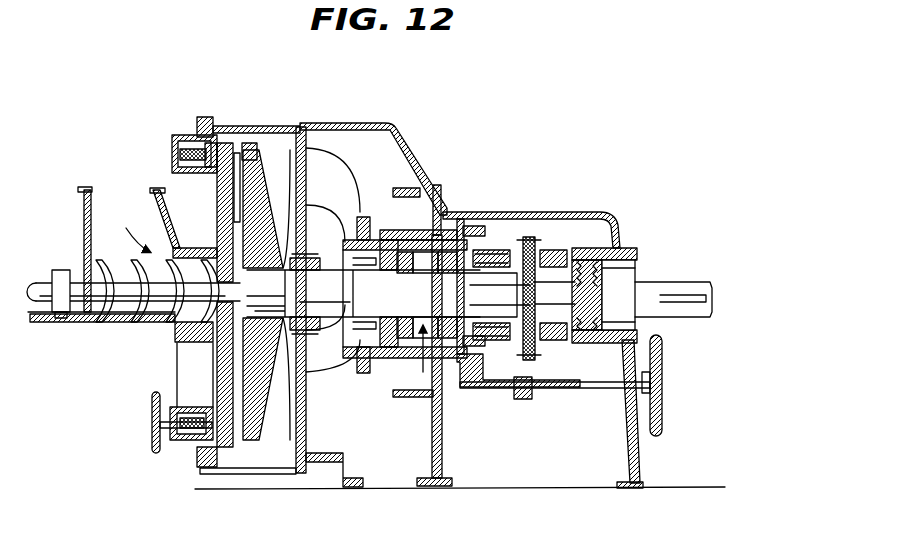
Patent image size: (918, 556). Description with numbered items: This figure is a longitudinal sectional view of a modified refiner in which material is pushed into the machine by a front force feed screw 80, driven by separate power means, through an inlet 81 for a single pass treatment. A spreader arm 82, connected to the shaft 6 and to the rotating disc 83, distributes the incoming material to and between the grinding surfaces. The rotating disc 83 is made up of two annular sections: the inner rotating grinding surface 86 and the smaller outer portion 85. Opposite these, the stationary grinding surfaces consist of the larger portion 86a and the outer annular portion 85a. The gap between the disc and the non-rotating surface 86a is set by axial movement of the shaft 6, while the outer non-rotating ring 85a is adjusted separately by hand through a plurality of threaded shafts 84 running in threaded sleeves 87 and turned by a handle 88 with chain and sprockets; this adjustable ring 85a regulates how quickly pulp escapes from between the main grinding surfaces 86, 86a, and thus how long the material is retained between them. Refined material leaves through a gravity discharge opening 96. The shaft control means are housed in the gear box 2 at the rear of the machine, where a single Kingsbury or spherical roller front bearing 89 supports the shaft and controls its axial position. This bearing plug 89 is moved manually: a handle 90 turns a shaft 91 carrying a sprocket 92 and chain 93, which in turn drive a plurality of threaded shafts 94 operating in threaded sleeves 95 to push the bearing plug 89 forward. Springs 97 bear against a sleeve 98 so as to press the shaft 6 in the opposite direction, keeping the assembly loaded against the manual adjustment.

The gear box 2 is at (584, 211).
The shaft 6 is at (327, 284).
The front force feed screw 80 is at (108, 256).
The inlet 81 is at (97, 203).
The spreader arm 82 is at (233, 324).
The rotating disc 83 is at (286, 128).
The threaded shafts 84 is at (166, 442).
The outer portion 85 is at (250, 170).
The outer annular portion 85a is at (224, 143).
The rotating grinding surface 86 is at (282, 185).
The stationary grinding surface 86a is at (216, 190).
The threaded sleeves 87 is at (191, 412).
The handle 88 is at (152, 394).
The front bearing 89 is at (418, 358).
The handle 90 is at (664, 410).
The shaft 91 is at (598, 388).
The sprocket 92 is at (528, 400).
The chain 93 is at (536, 294).
The threaded shafts 94 is at (548, 262).
The threaded sleeves 95 is at (490, 267).
The gravity discharge opening 96 is at (238, 462).
The springs 97 is at (606, 285).
The sleeve 98 is at (628, 252).